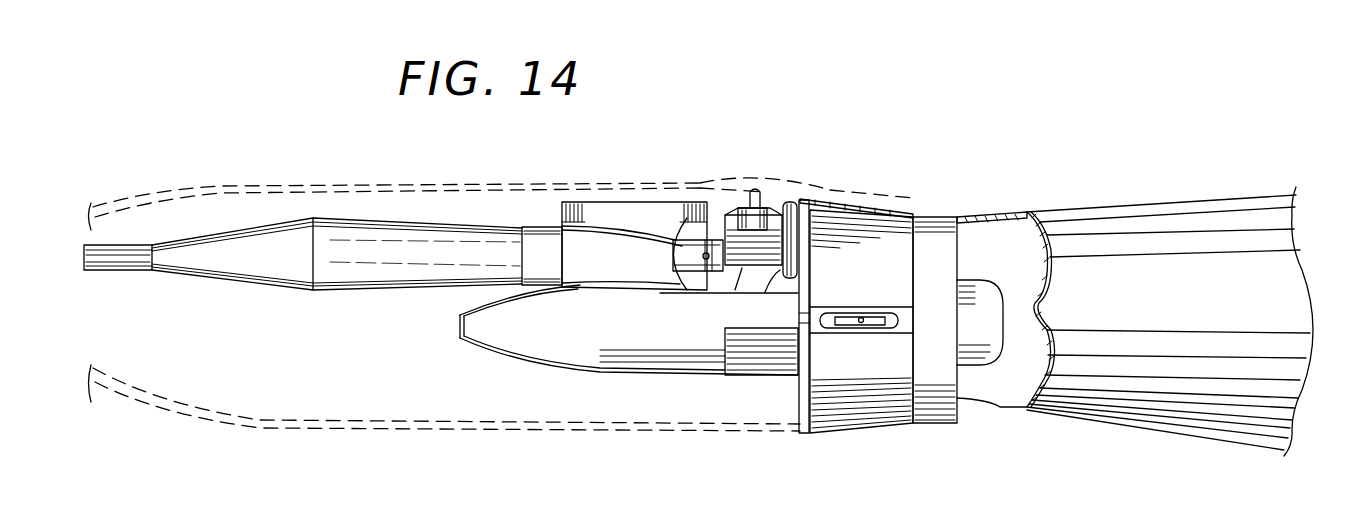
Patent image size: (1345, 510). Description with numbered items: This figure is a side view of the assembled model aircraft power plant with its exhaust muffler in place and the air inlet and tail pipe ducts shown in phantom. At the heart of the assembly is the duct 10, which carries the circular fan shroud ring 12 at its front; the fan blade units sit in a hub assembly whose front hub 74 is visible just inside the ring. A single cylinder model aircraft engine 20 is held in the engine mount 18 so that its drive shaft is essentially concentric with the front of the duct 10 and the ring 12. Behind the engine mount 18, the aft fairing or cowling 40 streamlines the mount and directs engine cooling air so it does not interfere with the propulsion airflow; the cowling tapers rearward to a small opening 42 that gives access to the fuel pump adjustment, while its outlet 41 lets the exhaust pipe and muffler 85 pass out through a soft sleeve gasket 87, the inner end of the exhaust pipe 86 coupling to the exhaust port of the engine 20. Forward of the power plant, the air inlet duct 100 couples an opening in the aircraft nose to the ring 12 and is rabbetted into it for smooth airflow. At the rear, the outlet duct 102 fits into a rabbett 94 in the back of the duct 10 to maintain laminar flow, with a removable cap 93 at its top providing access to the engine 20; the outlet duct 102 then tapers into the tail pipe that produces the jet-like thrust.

The duct 10 is at (890, 424).
The fan shroud ring 12 is at (938, 218).
The engine mount 18 is at (755, 372).
The single cylinder model aircraft engine 20 is at (743, 171).
The aft fairing or cowling 40 is at (518, 359).
The outlet 41 is at (560, 247).
The opening 42 is at (460, 329).
The front hub 74 is at (990, 366).
The exhaust pipe and muffler 85 is at (318, 289).
The exhaust pipe 86 is at (684, 272).
The soft sleeve gasket 87 is at (522, 252).
The removable cap 93 is at (818, 190).
The rabbett 94 is at (800, 407).
The air inlet duct 100 is at (1108, 206).
The outlet duct 102 is at (400, 182).